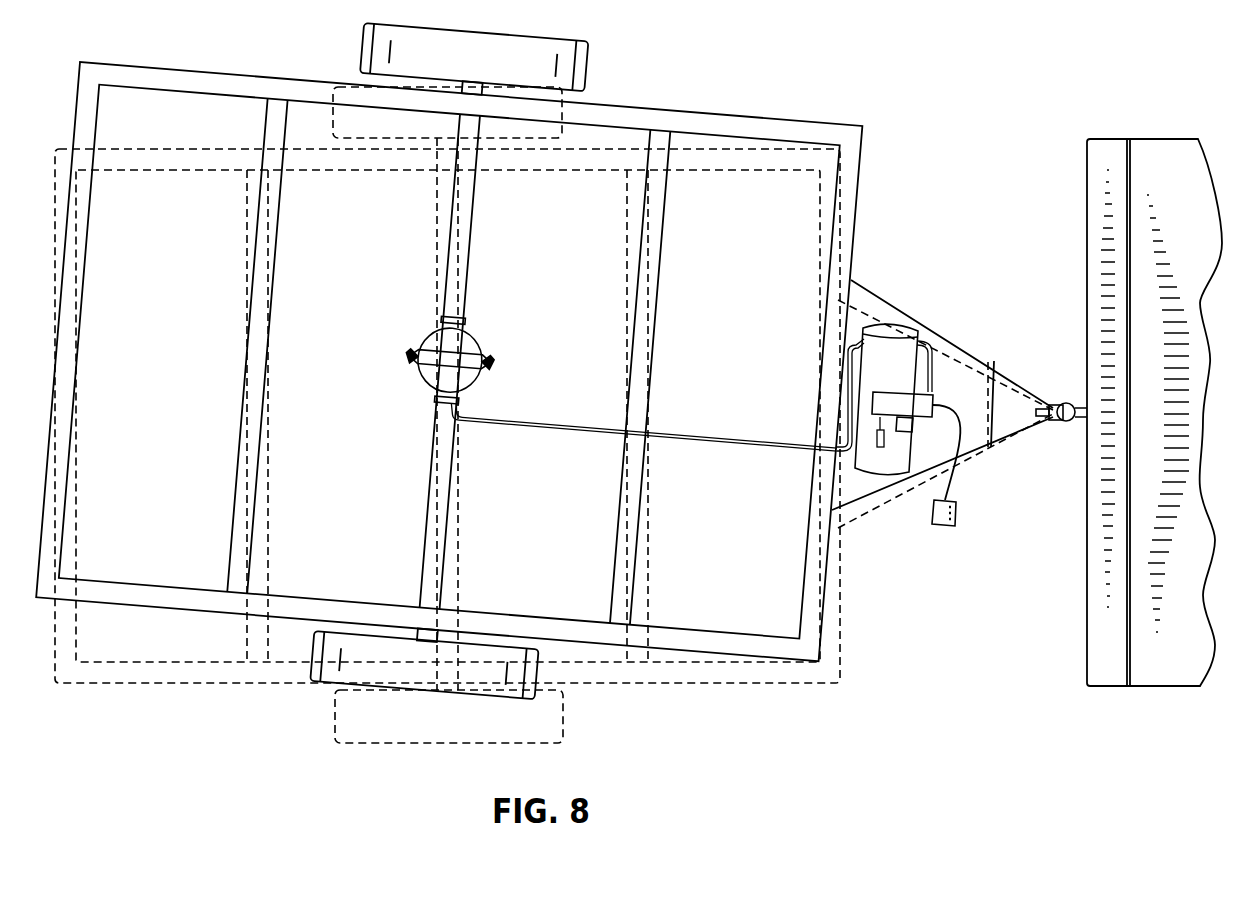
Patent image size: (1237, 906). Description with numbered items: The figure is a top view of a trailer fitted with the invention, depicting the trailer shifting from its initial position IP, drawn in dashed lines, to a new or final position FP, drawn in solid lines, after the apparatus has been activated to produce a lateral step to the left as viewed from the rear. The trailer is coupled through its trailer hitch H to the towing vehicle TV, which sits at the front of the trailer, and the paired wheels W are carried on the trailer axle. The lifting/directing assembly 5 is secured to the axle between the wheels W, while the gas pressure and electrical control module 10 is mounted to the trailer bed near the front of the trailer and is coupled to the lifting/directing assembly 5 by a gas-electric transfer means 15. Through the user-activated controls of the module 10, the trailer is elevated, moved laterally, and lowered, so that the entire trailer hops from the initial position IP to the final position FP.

The final position FP is at (163, 78).
The initial position IP is at (678, 683).
The paired wheels W is at (590, 62).
The lifting/directing assembly 5 is at (402, 312).
The gas-electric transfer means 15 is at (543, 424).
The gas pressure and electrical control module 10 is at (963, 537).
The trailer hitch H is at (1061, 400).
The towing vehicle TV is at (1082, 212).